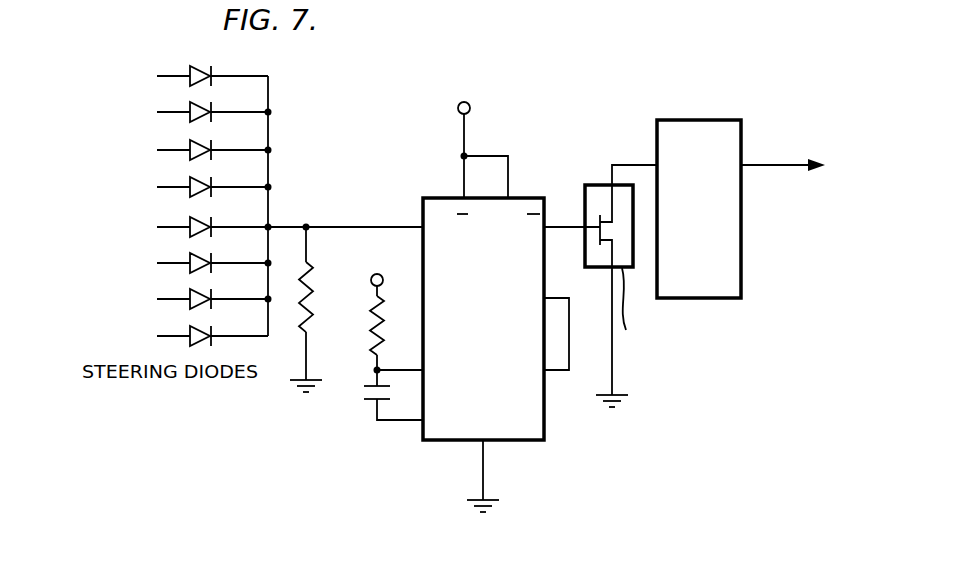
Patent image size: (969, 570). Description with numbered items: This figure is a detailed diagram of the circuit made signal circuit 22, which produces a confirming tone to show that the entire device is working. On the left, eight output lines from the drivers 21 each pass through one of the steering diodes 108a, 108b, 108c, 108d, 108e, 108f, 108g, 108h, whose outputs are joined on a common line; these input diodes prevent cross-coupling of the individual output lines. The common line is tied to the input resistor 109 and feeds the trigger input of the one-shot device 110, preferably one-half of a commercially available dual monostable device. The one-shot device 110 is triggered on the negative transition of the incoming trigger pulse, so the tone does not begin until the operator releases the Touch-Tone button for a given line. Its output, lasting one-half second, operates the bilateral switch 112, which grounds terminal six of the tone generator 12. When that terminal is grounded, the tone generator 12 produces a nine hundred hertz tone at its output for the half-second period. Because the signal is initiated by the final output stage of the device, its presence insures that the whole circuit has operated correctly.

The drivers 21 is at (78, 186).
The input diode 108a is at (211, 71).
The input diode 108b is at (230, 95).
The input diode 108c is at (230, 133).
The input diode 108d is at (230, 170).
The input diode 108e is at (230, 210).
The input diode 108f is at (230, 246).
The input diode 108g is at (230, 282).
The input diode 108h is at (230, 319).
The input resistor 109 is at (307, 267).
The one-shot device 110 is at (439, 434).
The bilateral switch 112 is at (603, 264).
The tone generator 12 is at (742, 285).
The circuit made signal circuit 22 is at (646, 91).